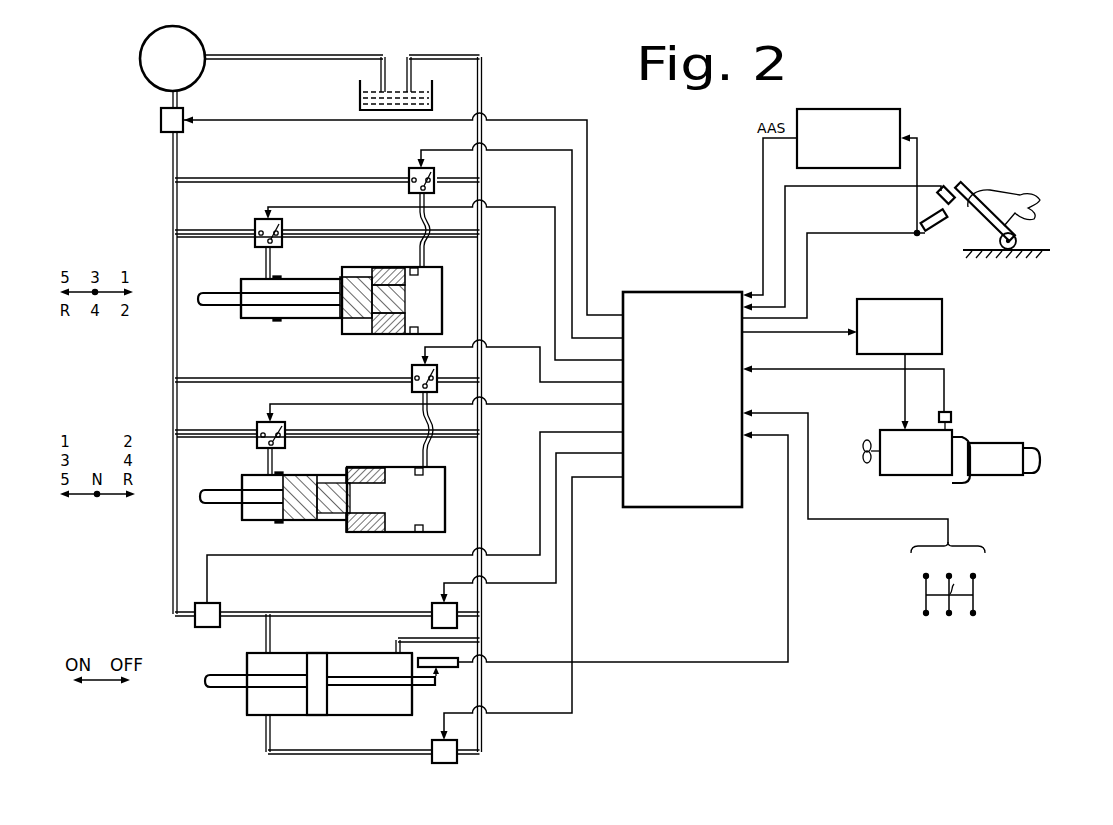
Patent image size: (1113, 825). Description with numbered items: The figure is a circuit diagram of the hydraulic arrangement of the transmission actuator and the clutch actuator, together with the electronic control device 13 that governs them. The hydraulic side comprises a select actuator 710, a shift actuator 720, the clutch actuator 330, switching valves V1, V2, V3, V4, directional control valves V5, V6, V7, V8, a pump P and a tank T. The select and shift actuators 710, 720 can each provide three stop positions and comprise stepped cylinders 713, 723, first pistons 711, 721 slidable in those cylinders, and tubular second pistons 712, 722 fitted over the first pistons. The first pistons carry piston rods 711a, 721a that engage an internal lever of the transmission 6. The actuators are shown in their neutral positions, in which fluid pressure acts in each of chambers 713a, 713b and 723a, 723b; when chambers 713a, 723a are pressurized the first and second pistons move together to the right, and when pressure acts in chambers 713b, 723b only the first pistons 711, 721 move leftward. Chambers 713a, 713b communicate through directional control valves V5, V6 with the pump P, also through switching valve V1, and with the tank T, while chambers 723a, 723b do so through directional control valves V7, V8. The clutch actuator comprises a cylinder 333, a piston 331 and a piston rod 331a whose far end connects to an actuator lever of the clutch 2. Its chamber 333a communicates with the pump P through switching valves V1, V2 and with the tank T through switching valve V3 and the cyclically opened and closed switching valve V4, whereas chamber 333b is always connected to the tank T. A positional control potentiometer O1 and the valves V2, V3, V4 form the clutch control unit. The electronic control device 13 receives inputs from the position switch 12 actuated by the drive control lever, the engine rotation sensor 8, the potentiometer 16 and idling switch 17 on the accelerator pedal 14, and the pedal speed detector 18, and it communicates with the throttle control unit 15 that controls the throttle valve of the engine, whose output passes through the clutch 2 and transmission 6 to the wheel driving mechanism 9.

The clutch 2 is at (967, 482).
The parallel-shaft gear transmission 6 is at (1010, 447).
The engine rotation sensor 8 is at (953, 410).
The wheel driving mechanism 9 is at (1040, 462).
The position switch 12 is at (970, 539).
The electronic control device 13 is at (682, 399).
The accelerator pedal 14 is at (970, 187).
The throttle control unit 15 is at (943, 327).
The potentiometer 16 is at (933, 232).
The idling switch 17 is at (943, 174).
The pedal speed detector 18 is at (875, 108).
The clutch actuator 330 is at (309, 709).
The piston 331 is at (315, 703).
The piston rod 331a is at (223, 673).
The cylinder 333 is at (343, 653).
The chamber 333a is at (260, 707).
The chamber 333b is at (395, 707).
The select actuator 710 is at (278, 320).
The first piston 711 is at (350, 303).
The piston rod 711a is at (237, 290).
The tubular second piston 712 is at (383, 327).
The stepped cylinder 713 is at (308, 278).
The chamber 713a is at (248, 316).
The chamber 713b is at (437, 307).
The shift actuator 720 is at (267, 520).
The first piston 721 is at (330, 508).
The piston rod 721a is at (240, 480).
The tubular second piston 722 is at (367, 528).
The stepped cylinder 723 is at (310, 475).
The chamber 723a is at (245, 518).
The chamber 723b is at (447, 497).
The positional control potentiometer O1 is at (447, 671).
The switching valve V1 is at (157, 120).
The switching valve V2 is at (221, 608).
The switching valve V3 is at (426, 608).
The switching valve V4 is at (444, 766).
The directional control valve V5 is at (251, 228).
The directional control valve V6 is at (405, 172).
The directional control valve V7 is at (257, 427).
The directional control valve V8 is at (414, 368).
The pump P is at (172, 58).
The tank T is at (396, 73).